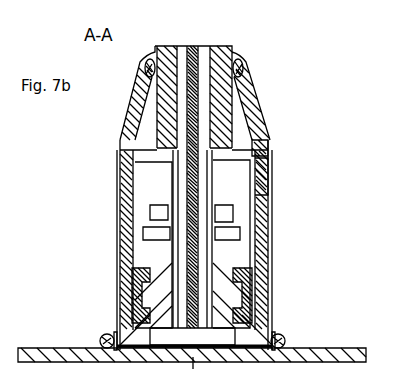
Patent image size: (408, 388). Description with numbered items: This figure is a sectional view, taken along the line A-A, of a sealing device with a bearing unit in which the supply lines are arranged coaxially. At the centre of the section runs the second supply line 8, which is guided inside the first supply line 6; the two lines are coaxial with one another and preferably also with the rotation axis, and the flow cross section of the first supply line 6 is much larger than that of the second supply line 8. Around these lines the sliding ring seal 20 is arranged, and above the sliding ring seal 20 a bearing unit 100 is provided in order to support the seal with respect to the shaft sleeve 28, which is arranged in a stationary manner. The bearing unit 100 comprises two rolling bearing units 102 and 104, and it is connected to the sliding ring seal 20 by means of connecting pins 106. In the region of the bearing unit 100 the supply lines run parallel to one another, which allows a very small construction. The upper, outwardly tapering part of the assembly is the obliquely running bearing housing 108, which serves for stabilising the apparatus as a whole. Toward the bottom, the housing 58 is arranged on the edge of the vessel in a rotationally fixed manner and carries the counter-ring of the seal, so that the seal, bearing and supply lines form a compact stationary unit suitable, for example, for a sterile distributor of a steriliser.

The bearing unit 100 is at (292, 122).
The rolling bearing unit 102 is at (250, 70).
The bearing housing 108 is at (258, 102).
The rolling bearing unit 104 is at (270, 140).
The connecting pins 106 is at (255, 190).
The sliding ring seal 20 is at (276, 237).
The first supply line 6 is at (180, 240).
The second supply line 8 is at (180, 186).
The housing 58 is at (127, 283).
The shaft sleeve 28 is at (224, 282).